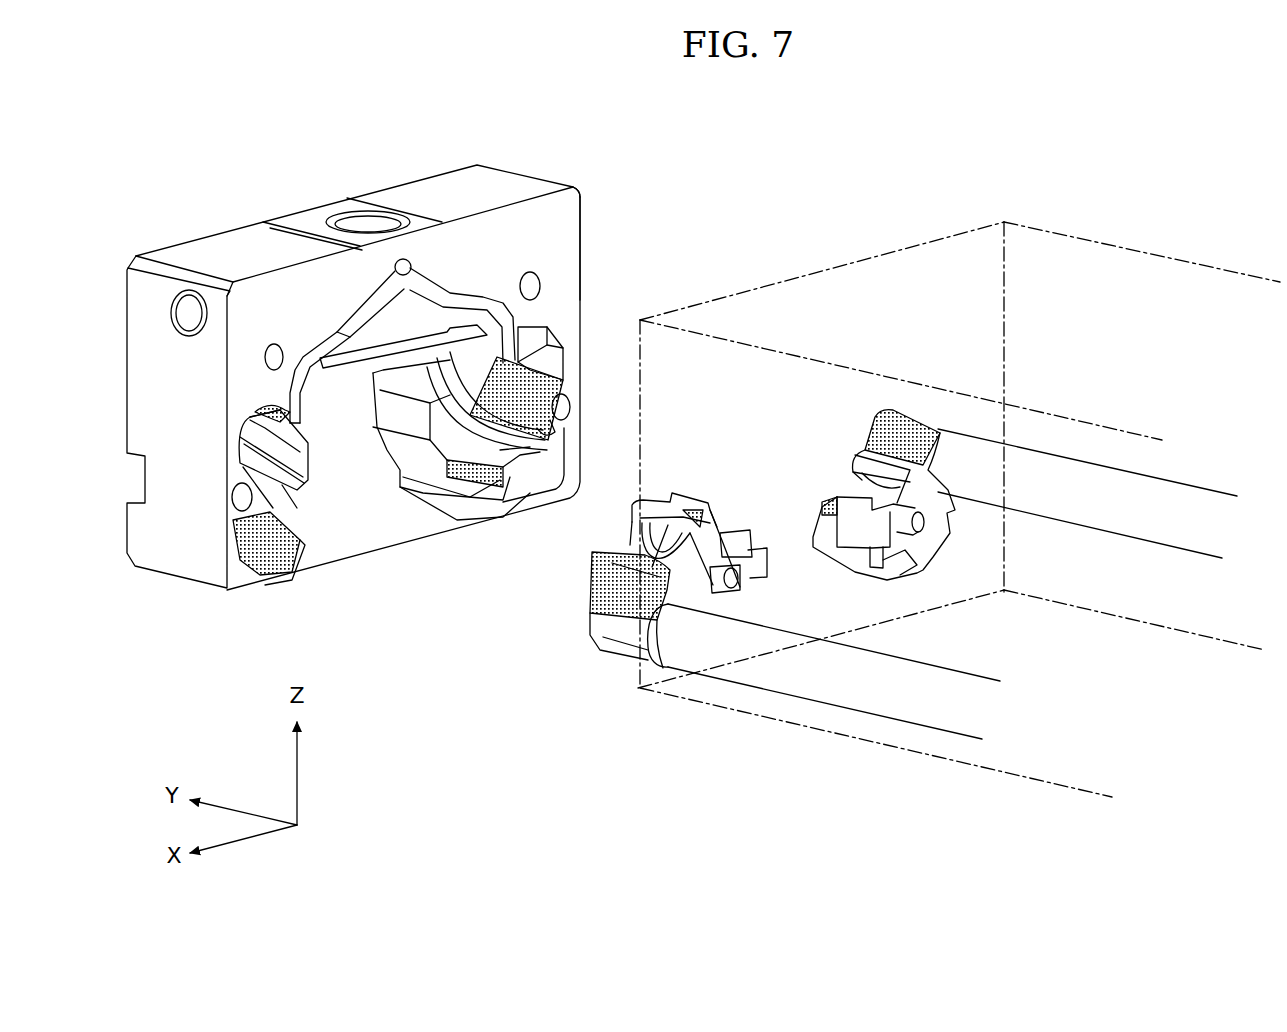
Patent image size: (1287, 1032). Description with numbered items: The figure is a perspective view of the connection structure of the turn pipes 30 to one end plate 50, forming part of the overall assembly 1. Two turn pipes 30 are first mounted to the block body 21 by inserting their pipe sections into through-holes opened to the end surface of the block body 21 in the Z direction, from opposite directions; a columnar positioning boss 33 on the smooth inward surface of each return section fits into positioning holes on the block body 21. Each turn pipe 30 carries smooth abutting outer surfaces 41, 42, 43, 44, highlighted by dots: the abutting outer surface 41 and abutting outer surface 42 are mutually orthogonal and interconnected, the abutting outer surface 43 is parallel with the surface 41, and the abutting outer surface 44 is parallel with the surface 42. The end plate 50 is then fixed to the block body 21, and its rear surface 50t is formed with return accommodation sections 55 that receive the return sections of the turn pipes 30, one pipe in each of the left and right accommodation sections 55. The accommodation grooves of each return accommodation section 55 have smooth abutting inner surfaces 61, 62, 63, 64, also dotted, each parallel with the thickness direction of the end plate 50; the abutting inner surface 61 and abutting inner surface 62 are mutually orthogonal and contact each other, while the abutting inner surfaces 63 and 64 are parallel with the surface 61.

The connector assembly 1 is at (792, 205).
The block body 21 is at (830, 732).
The turn pipe 30 is at (600, 632).
The positioning boss 33 is at (725, 545).
The abutting outer surface 41 is at (592, 598).
The abutting outer surface 42 is at (598, 560).
The abutting outer surface 43 is at (870, 440).
The abutting outer surface 44 is at (650, 500).
The end plate 50 is at (443, 190).
The rear surface 50t is at (548, 275).
The return accommodation section 55 is at (472, 443).
The abutting inner surface 61 is at (550, 385).
The abutting inner surface 62 is at (537, 432).
The abutting inner surface 63 is at (290, 548).
The abutting inner surface 64 is at (267, 410).